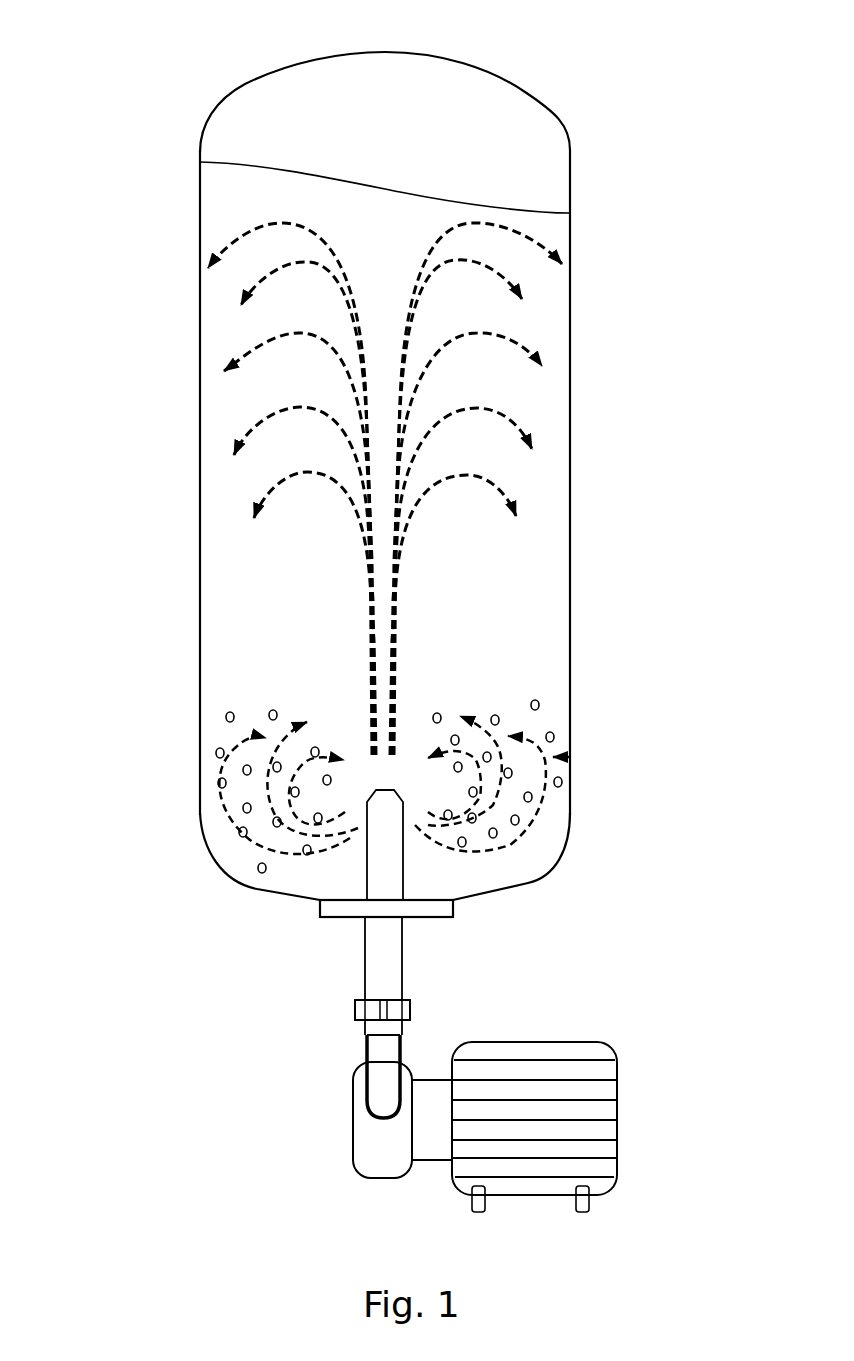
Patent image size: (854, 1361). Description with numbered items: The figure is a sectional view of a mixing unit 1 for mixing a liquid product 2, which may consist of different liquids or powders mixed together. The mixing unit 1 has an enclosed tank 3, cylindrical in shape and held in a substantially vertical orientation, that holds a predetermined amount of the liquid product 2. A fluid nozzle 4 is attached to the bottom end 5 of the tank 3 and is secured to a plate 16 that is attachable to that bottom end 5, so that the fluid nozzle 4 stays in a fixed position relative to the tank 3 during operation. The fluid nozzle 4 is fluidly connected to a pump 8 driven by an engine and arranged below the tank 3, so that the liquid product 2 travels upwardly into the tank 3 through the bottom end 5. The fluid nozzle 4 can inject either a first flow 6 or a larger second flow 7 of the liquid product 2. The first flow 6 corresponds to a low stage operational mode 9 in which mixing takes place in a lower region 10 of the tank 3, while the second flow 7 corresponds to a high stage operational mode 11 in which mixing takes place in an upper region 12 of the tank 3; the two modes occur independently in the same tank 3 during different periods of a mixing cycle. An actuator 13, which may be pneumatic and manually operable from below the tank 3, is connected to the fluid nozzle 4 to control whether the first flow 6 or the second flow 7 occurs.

The mixing unit 1 is at (543, 49).
The liquid product 2 is at (224, 613).
The tank 3 is at (198, 305).
The fluid nozzle 4 is at (392, 858).
The bottom end 5 is at (228, 878).
The first flow 6 is at (223, 807).
The second flow 7 is at (222, 372).
The pump 8 is at (378, 1160).
The low stage operational mode 9 is at (568, 757).
The lower region 10 is at (198, 713).
The high stage operational mode 11 is at (527, 282).
The upper region 12 is at (198, 214).
The actuator 13 is at (372, 1012).
The plate 16 is at (395, 907).